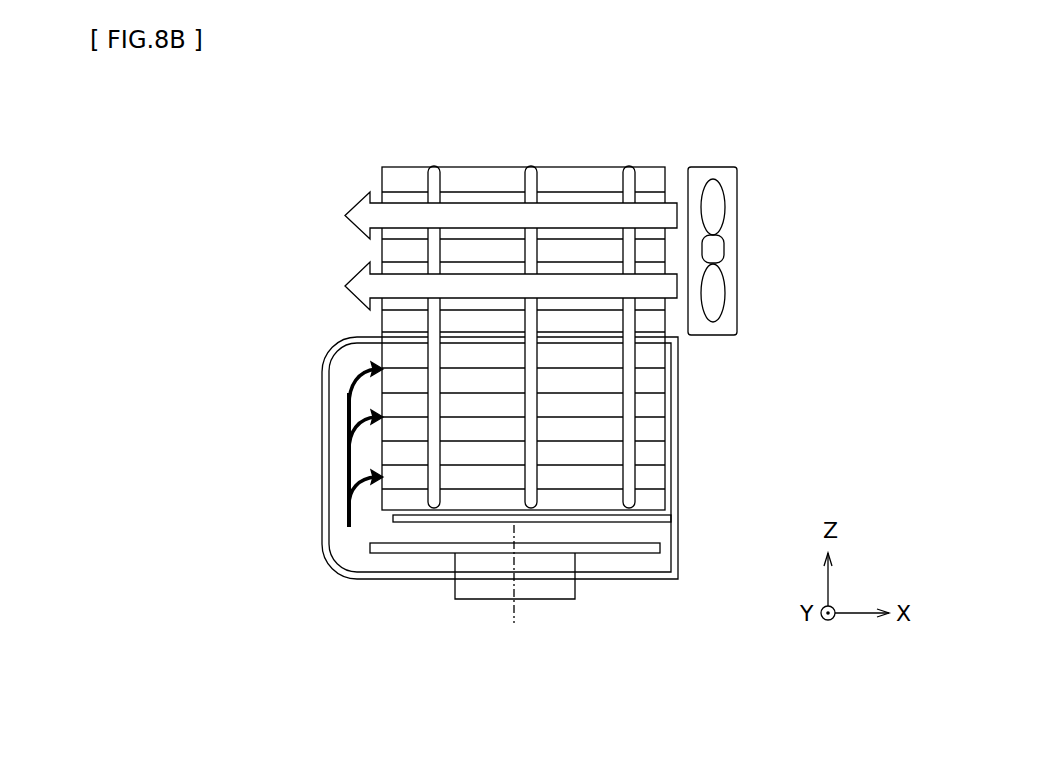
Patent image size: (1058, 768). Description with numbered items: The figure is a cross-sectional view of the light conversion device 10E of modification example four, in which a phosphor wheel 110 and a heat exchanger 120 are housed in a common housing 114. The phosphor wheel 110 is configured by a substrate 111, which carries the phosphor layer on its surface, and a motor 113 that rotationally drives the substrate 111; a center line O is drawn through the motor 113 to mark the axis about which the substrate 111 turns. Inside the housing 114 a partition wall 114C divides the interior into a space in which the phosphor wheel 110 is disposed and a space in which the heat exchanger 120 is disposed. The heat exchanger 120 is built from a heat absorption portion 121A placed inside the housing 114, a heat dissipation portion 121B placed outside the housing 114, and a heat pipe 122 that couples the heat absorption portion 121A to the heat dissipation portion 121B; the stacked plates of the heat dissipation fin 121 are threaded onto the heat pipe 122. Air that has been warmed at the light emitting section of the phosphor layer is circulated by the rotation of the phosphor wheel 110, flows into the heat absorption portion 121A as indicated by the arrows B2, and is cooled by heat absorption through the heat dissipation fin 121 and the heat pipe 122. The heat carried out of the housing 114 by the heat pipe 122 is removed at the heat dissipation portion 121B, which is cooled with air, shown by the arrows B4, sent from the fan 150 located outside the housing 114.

The light conversion device 10E is at (780, 152).
The heat exchanger 120 is at (833, 177).
The fan 150 is at (711, 165).
The heat dissipation fin 121 is at (653, 363).
The heat absorption portion 121A is at (668, 380).
The heat dissipation portion 121B is at (668, 197).
The heat pipe 122 is at (637, 427).
The phosphor wheel 110 is at (655, 566).
The housing 114 is at (678, 534).
The partition wall 114C is at (655, 510).
The substrate 111 is at (608, 553).
The motor 113 is at (565, 600).
The center axis O is at (514, 592).
The arrow B2 is at (348, 465).
The arrow B4 is at (574, 200).